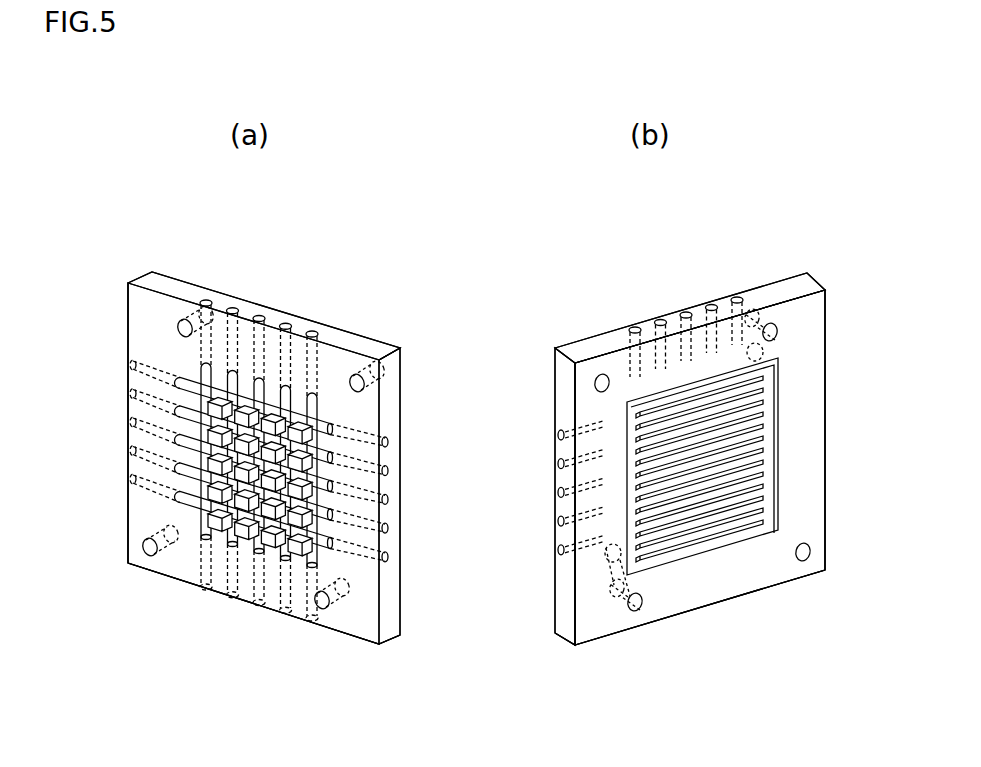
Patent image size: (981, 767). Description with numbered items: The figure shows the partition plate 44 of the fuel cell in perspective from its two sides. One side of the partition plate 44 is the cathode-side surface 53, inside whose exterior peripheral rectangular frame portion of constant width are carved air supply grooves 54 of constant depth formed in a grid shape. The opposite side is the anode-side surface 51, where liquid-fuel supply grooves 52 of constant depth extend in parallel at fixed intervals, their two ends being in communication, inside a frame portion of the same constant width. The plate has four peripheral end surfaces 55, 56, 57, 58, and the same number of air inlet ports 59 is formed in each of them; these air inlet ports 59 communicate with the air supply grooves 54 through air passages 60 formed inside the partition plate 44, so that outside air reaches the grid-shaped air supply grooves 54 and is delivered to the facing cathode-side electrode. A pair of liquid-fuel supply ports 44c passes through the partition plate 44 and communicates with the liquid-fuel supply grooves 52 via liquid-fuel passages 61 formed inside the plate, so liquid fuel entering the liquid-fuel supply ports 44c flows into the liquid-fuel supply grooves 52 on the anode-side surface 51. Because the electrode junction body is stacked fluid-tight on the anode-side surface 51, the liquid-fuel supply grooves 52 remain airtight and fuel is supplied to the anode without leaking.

The partition plate 44 is at (116, 281).
The liquid-fuel supply port 44c is at (363, 383).
The anode-side surface 51 is at (682, 602).
The liquid-fuel supply grooves 52 is at (730, 525).
The cathode-side surface 53 is at (178, 575).
The air supply grooves 54 is at (273, 497).
The peripheral end surface 55 is at (348, 340).
The peripheral end surface 56 is at (386, 610).
The peripheral end surface 57 is at (358, 642).
The peripheral end surface 58 is at (128, 468).
The air inlet ports 59 is at (333, 324).
The air passages 60 is at (133, 450).
The liquid-fuel passages 61 is at (778, 345).